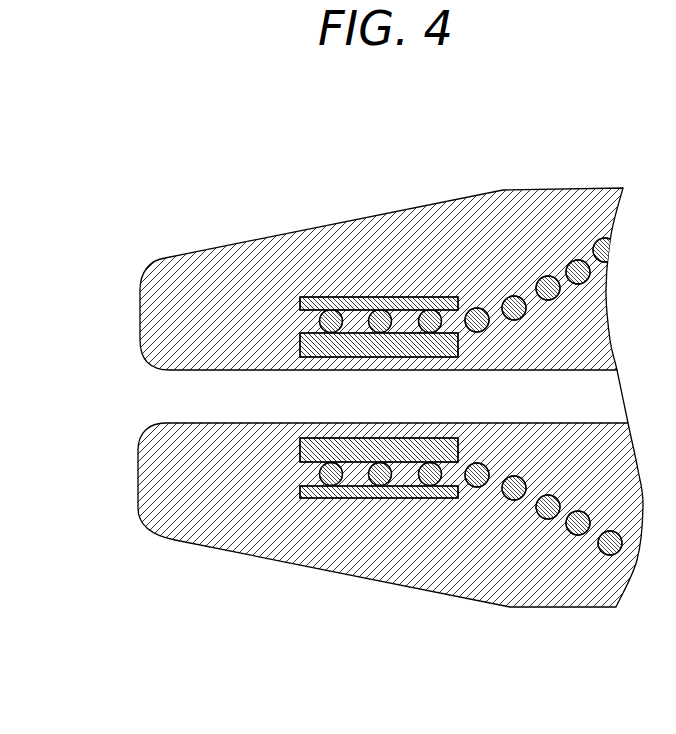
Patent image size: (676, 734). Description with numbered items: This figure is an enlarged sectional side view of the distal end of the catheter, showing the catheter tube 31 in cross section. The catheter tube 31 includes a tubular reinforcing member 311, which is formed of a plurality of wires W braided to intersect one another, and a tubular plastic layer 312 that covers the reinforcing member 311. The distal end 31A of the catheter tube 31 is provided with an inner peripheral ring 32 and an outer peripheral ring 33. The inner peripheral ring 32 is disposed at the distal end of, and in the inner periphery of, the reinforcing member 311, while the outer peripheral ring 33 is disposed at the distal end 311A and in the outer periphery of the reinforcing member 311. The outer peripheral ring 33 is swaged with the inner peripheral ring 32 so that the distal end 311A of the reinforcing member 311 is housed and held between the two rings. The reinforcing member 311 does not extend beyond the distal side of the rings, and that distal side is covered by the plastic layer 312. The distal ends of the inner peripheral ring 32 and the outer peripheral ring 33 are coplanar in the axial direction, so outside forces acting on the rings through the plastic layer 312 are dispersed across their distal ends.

The catheter tube 31 is at (94, 171).
The distal end of the catheter tube 31A is at (370, 201).
The reinforcing member 311 is at (515, 305).
The distal end of the reinforcing member 311A is at (300, 322).
The plastic layer 312 is at (222, 263).
The inner peripheral ring 32 is at (373, 352).
The outer peripheral ring 33 is at (386, 490).
The wires W is at (513, 492).